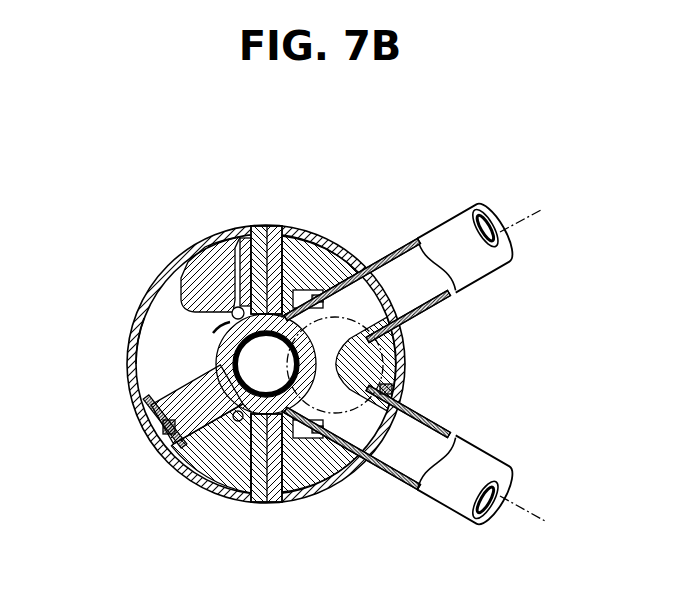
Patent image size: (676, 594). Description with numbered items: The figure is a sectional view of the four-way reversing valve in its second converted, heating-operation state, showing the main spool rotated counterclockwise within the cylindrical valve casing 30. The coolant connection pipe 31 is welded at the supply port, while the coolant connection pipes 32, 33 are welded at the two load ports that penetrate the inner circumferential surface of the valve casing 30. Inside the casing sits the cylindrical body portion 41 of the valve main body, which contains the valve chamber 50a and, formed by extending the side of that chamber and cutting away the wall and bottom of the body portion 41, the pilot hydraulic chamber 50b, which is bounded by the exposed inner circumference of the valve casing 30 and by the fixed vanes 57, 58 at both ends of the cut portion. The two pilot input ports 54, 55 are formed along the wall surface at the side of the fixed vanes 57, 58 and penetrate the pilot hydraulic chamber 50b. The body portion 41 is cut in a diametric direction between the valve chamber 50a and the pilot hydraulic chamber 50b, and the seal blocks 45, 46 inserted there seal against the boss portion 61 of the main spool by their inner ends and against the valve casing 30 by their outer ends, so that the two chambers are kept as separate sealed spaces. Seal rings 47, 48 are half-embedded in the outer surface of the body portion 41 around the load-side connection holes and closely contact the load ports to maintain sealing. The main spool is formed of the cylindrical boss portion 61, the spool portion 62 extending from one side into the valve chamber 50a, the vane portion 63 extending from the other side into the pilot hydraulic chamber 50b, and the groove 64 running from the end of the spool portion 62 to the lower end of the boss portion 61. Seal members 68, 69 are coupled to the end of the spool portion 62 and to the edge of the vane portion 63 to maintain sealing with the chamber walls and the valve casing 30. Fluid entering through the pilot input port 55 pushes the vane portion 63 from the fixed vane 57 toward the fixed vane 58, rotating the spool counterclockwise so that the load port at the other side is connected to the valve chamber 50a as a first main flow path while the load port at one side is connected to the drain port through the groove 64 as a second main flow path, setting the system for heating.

The valve casing 30 is at (200, 248).
The coolant connection pipe 31 is at (360, 313).
The coolant connection pipe 32 is at (447, 223).
The coolant connection pipe 33 is at (446, 500).
The body portion 41 is at (300, 250).
The seal block 45 is at (263, 243).
The seal block 46 is at (257, 494).
The seal ring 47 is at (341, 277).
The seal ring 48 is at (402, 388).
The valve chamber 50a is at (322, 494).
The pilot hydraulic chamber 50b is at (157, 340).
The pilot input port 54 is at (205, 455).
The pilot input port 55 is at (218, 236).
The fixed vane 57 is at (172, 443).
The fixed vane 58 is at (172, 279).
The boss portion 61 is at (213, 343).
The spool portion 62 is at (333, 253).
The vane portion 63 is at (173, 384).
The groove 64 is at (247, 363).
The seal member 68 is at (397, 350).
The seal member 69 is at (180, 399).